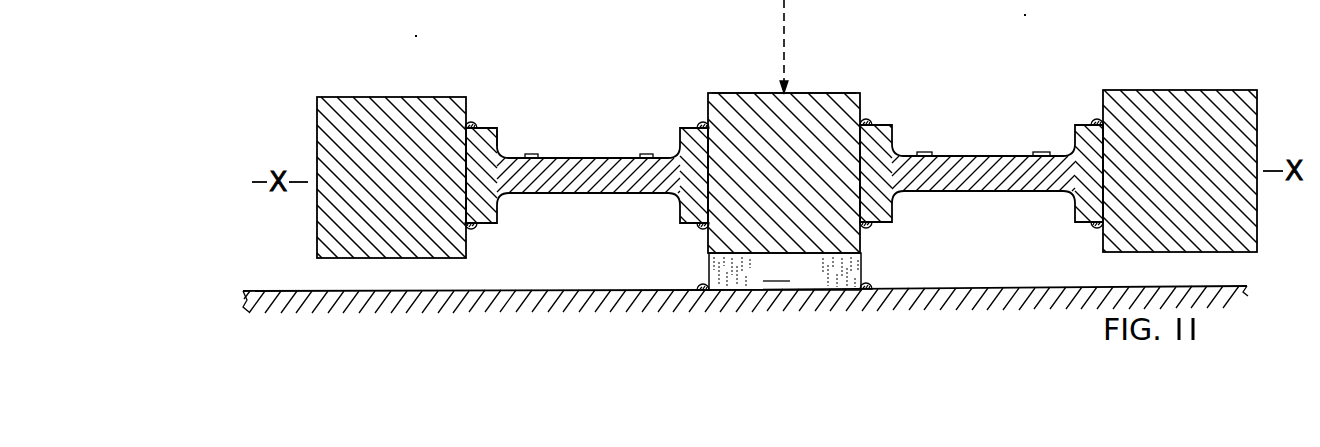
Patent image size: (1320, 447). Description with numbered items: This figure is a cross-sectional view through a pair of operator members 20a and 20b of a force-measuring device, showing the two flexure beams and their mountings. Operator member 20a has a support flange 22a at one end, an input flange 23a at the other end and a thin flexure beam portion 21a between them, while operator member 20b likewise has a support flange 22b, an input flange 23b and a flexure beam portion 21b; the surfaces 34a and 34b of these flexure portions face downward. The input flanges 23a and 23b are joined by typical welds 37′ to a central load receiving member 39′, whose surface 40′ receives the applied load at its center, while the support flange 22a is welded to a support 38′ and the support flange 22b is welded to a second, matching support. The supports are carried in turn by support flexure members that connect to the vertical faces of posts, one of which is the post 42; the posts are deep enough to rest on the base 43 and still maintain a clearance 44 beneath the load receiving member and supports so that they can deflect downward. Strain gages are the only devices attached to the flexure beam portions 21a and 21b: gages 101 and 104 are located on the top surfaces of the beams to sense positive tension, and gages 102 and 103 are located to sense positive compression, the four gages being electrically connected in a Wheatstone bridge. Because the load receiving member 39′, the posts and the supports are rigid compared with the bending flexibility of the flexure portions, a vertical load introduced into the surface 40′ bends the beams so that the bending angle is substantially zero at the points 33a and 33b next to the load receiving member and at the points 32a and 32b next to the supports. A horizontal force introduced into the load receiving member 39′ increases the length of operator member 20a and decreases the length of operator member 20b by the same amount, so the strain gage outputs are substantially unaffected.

The support 38′ is at (343, 100).
The typical welds 37′ is at (468, 123).
The support flange 22a is at (495, 128).
The operator member 20a is at (587, 160).
The strain gage 101 is at (531, 154).
The strain gage 102 is at (647, 154).
The input flange 23a is at (690, 128).
The point 33a is at (786, 144).
The surface 40′ is at (812, 93).
The point 33b is at (855, 170).
The input flange 23b is at (890, 123).
The operator member 20b is at (981, 143).
The strain gage 103 is at (963, 110).
The strain gage 104 is at (1043, 152).
The support flange 22b is at (1077, 124).
The point 32b is at (1108, 168).
The point 32a is at (472, 182).
The flexure beam portion 21a is at (547, 173).
The beam lower surface 34a is at (592, 172).
The flexure beam portion 21b is at (937, 174).
The beam lower surface 34b is at (1007, 176).
The base 43 is at (305, 291).
The clearance 44 is at (785, 291).
The post 42 is at (748, 273).
The load receiving member 39′ is at (818, 253).